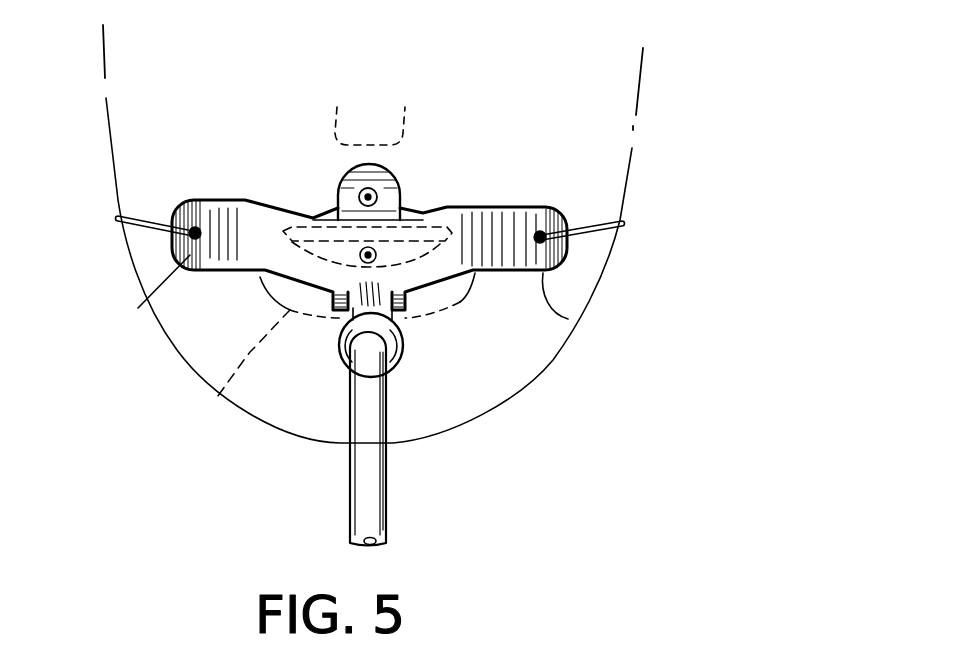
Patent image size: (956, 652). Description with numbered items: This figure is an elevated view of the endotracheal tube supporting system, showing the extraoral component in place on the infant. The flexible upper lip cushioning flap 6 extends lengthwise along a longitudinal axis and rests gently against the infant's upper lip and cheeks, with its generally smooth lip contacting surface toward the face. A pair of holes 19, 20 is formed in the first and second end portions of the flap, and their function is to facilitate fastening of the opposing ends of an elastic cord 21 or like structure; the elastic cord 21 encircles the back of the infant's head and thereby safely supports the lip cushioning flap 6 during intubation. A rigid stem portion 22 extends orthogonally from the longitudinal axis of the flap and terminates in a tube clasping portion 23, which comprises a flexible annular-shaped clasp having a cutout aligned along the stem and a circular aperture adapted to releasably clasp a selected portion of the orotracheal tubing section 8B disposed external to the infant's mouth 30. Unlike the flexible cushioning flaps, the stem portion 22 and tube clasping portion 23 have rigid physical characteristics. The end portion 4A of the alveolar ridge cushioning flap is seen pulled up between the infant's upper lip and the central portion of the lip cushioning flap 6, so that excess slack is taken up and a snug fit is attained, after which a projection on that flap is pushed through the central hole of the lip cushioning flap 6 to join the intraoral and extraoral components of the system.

The flexible upper lip cushioning flap 6 is at (250, 213).
The end portion of the alveolar ridge cushioning flap portion 4A is at (398, 178).
The elastic cord 21 is at (140, 230).
The hole 19 is at (148, 308).
The hole 20 is at (568, 319).
The mouth 30 is at (240, 373).
The rigid stem portion 22 is at (350, 310).
The tube clasping portion 23 is at (403, 357).
The orotracheal tubing section 8B is at (356, 493).